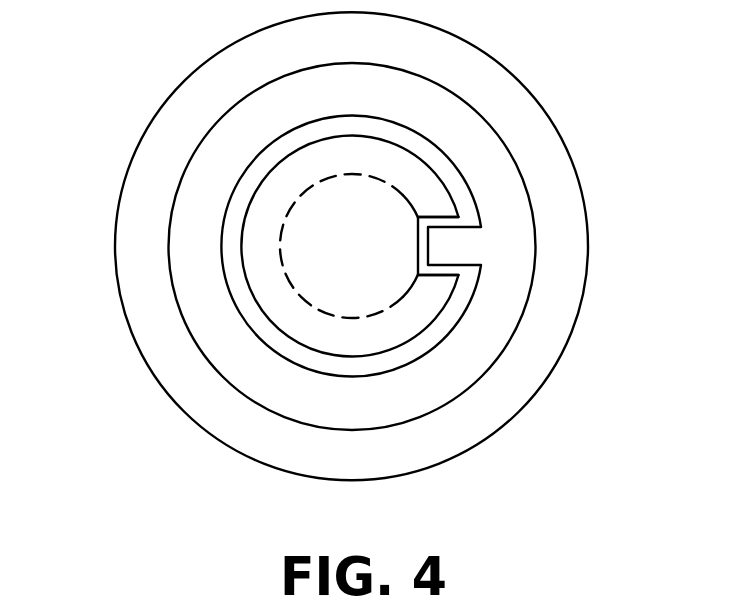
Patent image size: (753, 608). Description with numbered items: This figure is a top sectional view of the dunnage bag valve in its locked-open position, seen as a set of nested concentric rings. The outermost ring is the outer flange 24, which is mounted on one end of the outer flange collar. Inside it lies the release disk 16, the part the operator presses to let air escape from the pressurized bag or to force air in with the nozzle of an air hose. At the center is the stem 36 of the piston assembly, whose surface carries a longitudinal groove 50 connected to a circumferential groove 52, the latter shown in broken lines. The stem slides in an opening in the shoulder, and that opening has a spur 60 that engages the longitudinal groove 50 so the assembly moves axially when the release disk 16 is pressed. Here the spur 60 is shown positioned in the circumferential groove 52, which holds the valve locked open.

The outer flange 24 is at (168, 142).
The release disk 16 is at (195, 225).
The stem 36 is at (267, 281).
The circumferential groove 52 is at (390, 183).
The longitudinal groove 50 is at (432, 270).
The spur 60 is at (453, 253).